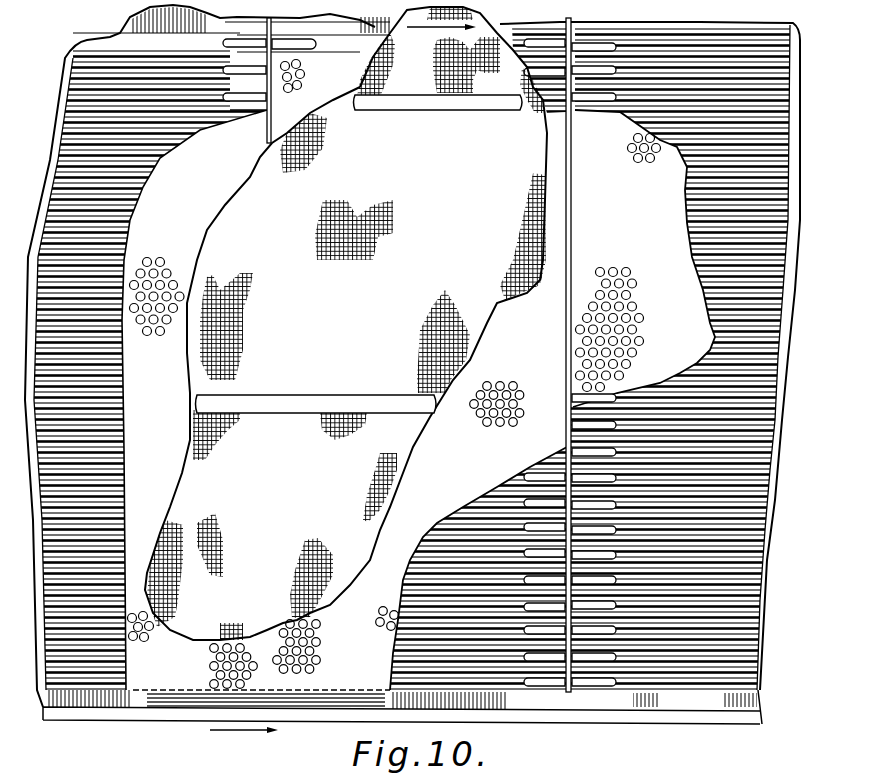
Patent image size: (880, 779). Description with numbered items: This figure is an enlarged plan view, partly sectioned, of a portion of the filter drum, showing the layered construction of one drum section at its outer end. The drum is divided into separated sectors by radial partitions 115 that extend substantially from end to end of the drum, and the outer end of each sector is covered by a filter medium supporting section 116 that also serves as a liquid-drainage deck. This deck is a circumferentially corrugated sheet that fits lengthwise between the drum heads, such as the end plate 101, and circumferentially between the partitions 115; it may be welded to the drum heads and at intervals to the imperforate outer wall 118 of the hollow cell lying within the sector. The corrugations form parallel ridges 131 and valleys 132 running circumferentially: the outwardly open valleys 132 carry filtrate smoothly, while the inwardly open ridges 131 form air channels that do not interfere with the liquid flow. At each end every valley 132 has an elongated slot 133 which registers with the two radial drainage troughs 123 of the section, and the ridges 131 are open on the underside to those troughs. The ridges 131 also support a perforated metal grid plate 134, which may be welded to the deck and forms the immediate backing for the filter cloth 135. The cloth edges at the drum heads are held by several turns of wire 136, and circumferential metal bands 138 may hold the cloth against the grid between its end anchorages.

The end plate 101 is at (630, 713).
The radial partition 115 is at (276, 18).
The filter medium supporting section 116 is at (50, 173).
The outer wall 118 is at (43, 657).
The drainage trough 123 is at (292, 35).
The ridge 131 is at (745, 668).
The valley 132 is at (743, 610).
The elongated slot 133 is at (573, 683).
The perforated metal grid plate 134 is at (680, 367).
The filter cloth 135 is at (278, 510).
The wire 136 is at (357, 680).
The circumferential metal band 138 is at (450, 108).